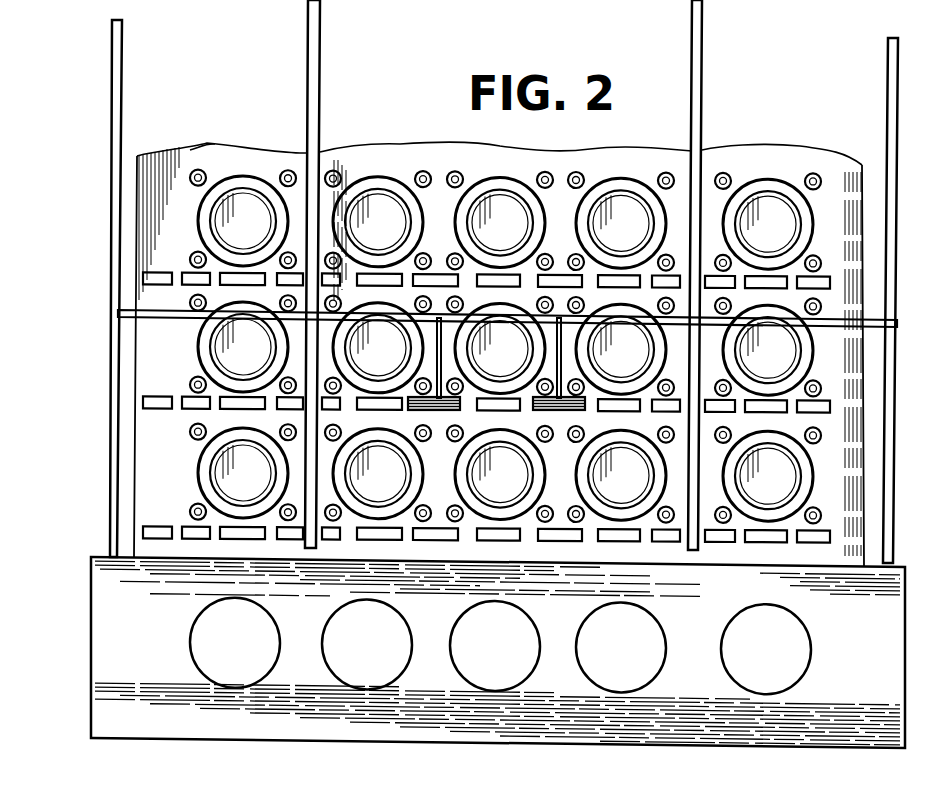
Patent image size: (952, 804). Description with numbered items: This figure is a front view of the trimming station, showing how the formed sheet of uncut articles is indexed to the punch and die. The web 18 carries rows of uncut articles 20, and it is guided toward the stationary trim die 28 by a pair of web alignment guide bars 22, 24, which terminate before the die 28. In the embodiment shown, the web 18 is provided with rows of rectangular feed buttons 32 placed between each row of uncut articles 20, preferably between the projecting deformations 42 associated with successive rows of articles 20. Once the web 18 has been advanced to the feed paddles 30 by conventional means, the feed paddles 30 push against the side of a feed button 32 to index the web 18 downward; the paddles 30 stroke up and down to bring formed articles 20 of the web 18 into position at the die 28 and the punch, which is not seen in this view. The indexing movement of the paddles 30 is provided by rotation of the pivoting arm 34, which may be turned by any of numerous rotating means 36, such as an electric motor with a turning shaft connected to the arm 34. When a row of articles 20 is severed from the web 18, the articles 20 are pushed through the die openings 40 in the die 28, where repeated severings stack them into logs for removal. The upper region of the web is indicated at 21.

The web 18 is at (838, 366).
The uncut articles 20 is at (207, 229).
The upper edge of panel 21 is at (202, 152).
The web alignment guide bar 22 is at (308, 95).
The web alignment guide bar 24 is at (702, 97).
The stationary trim die 28 is at (482, 652).
The feed paddles 30 is at (437, 412).
The feed buttons 32 is at (232, 278).
The pivoting arm 34 is at (832, 320).
The rotating means 36 is at (112, 433).
The die openings 40 is at (339, 606).
The projecting deformations 42 is at (287, 171).